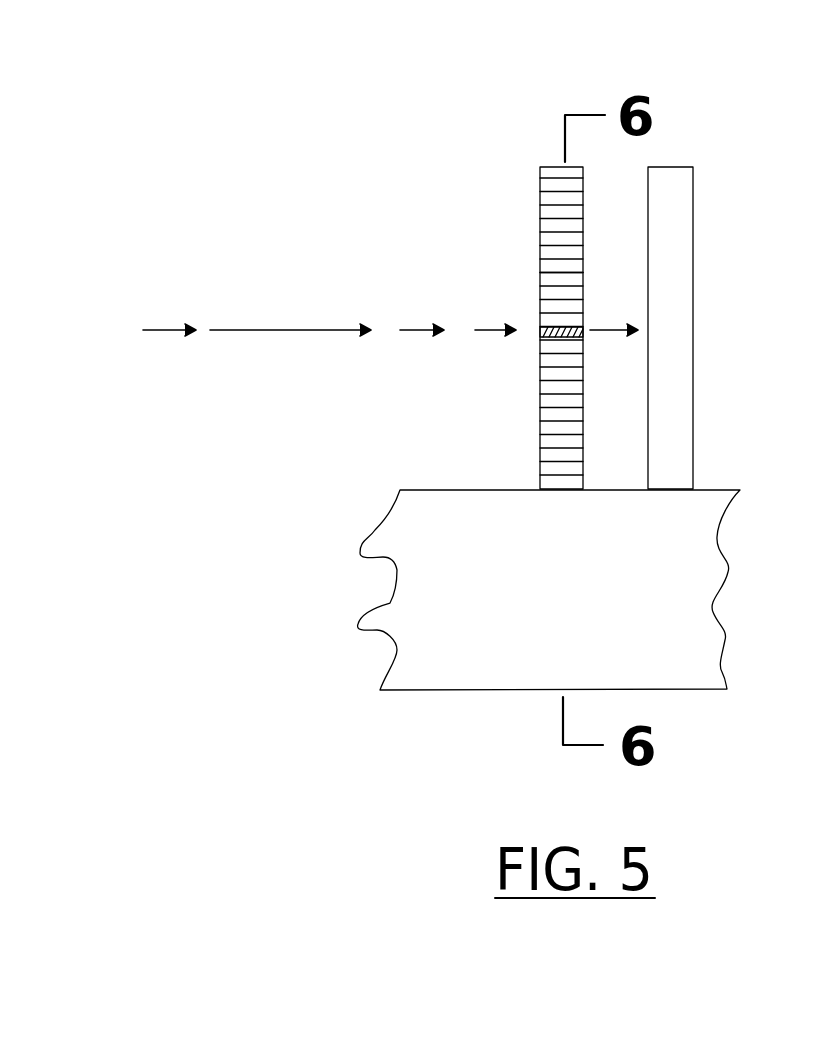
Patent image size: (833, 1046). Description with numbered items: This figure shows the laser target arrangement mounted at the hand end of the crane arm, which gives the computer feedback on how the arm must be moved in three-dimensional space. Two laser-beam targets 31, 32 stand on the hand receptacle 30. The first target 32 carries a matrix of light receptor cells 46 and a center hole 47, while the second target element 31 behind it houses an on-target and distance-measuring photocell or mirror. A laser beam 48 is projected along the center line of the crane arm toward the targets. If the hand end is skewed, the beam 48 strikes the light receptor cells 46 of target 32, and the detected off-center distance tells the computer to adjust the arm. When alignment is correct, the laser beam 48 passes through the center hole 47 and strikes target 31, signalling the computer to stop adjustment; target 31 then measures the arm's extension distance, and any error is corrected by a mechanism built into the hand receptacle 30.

The hand receptacle 30 is at (582, 527).
The laser-beam target 31 is at (693, 293).
The laser-beam target 32 is at (480, 291).
The light receptor cells 46 is at (560, 277).
The center hole 47 is at (540, 330).
The laser beam 48 is at (390, 266).